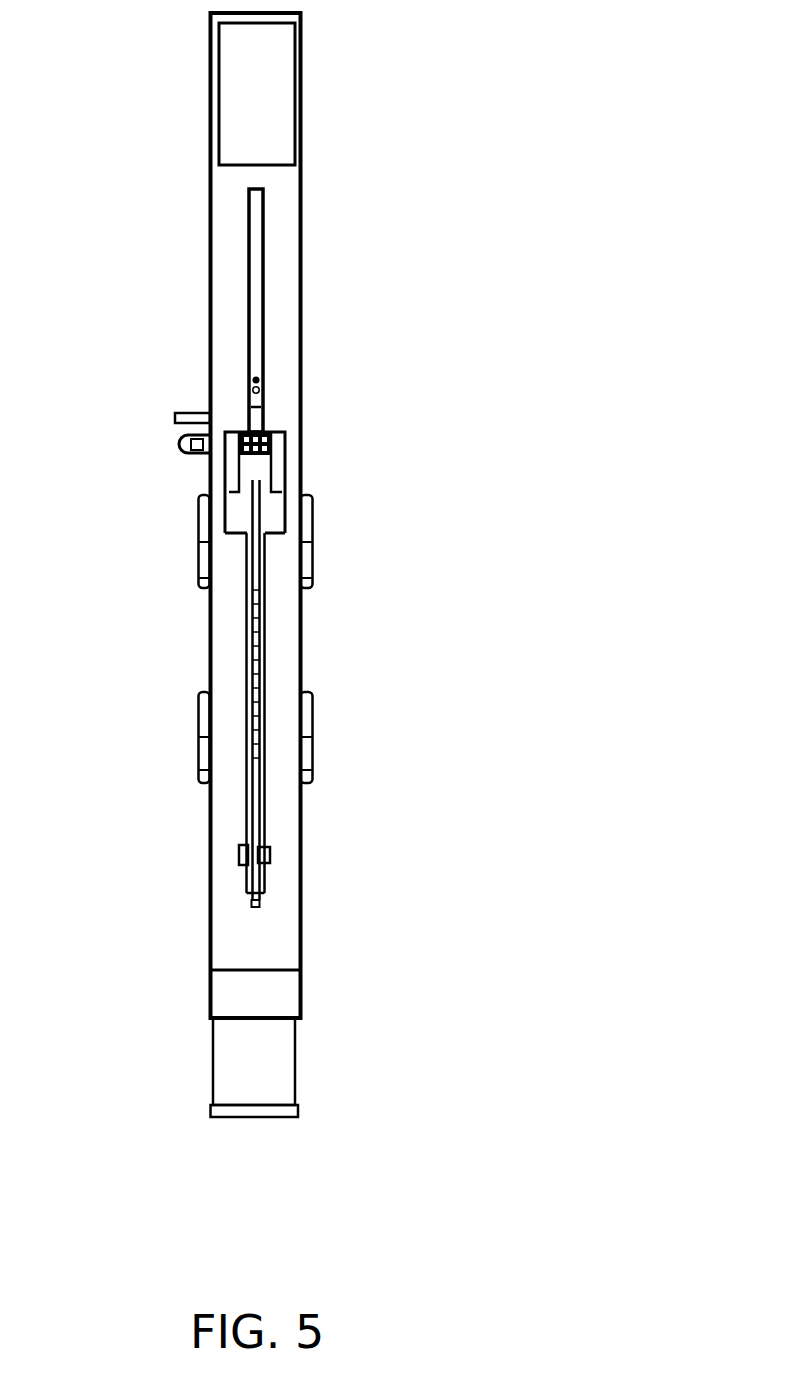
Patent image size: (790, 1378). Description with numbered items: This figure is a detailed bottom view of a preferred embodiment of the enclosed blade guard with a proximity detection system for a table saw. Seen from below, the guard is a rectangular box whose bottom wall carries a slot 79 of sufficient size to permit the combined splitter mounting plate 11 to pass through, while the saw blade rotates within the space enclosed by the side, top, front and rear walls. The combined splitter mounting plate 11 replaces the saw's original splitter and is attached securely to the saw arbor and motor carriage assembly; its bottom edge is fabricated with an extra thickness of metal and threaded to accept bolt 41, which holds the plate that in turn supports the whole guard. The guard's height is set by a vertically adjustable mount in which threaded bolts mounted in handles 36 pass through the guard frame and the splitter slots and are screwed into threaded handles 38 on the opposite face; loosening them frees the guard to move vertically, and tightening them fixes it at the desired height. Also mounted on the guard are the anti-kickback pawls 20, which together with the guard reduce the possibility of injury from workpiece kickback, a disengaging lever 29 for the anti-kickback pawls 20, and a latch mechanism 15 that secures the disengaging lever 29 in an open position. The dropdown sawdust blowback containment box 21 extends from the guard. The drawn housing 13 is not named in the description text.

The combined splitter mounting plate 11 is at (262, 770).
The housing tube 13 is at (207, 875).
The latch mechanism 15 is at (185, 417).
The anti-kickback pawls 20 is at (235, 470).
The dropdown sawdust blowback containment box 21 is at (278, 126).
The disengaging lever 29 is at (187, 455).
The handles 36 is at (312, 698).
The threaded handle 38 is at (199, 698).
The bolt 41 is at (240, 845).
The slot 79 is at (245, 200).